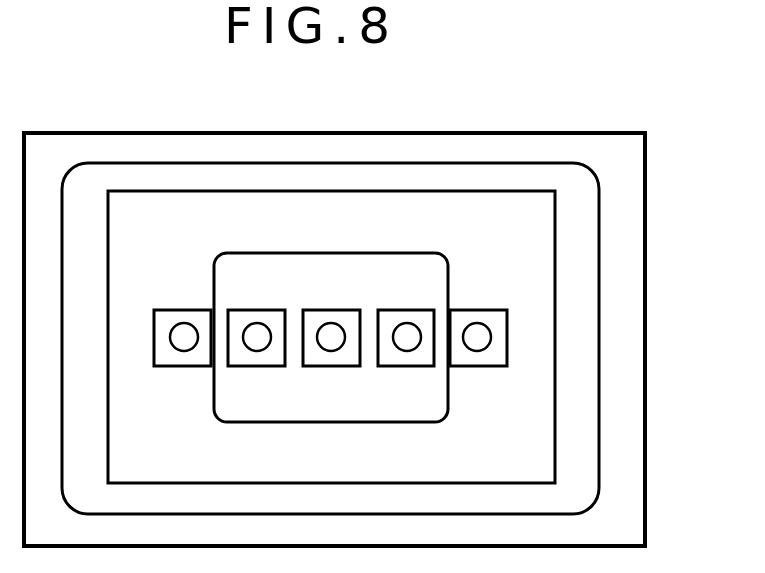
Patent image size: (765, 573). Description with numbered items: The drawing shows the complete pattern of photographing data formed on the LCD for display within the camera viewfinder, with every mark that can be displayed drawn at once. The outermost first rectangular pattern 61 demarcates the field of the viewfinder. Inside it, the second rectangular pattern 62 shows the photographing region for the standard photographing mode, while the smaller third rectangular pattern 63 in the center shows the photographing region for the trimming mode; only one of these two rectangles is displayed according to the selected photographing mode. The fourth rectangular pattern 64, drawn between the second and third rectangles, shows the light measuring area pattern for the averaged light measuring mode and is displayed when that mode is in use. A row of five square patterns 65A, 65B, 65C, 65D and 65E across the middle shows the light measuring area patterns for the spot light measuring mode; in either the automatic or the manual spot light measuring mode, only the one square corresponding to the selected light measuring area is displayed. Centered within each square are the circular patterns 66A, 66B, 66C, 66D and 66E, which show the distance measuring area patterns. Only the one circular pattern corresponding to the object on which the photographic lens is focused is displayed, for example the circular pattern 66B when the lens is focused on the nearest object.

The first rectangular figure 61 is at (645, 234).
The second rectangular figure 62 is at (600, 300).
The third rectangular figure 63 is at (440, 257).
The fourth rectangular figure 64 is at (555, 375).
The square figure 65A is at (185, 367).
The square figure 65B is at (257, 367).
The square figure 65C is at (337, 367).
The square figure 65D is at (410, 367).
The square figure 65E is at (485, 367).
The circular figure 66A is at (182, 323).
The circular figure 66B is at (256, 323).
The circular figure 66C is at (331, 323).
The circular figure 66D is at (402, 323).
The circular figure 66E is at (480, 323).